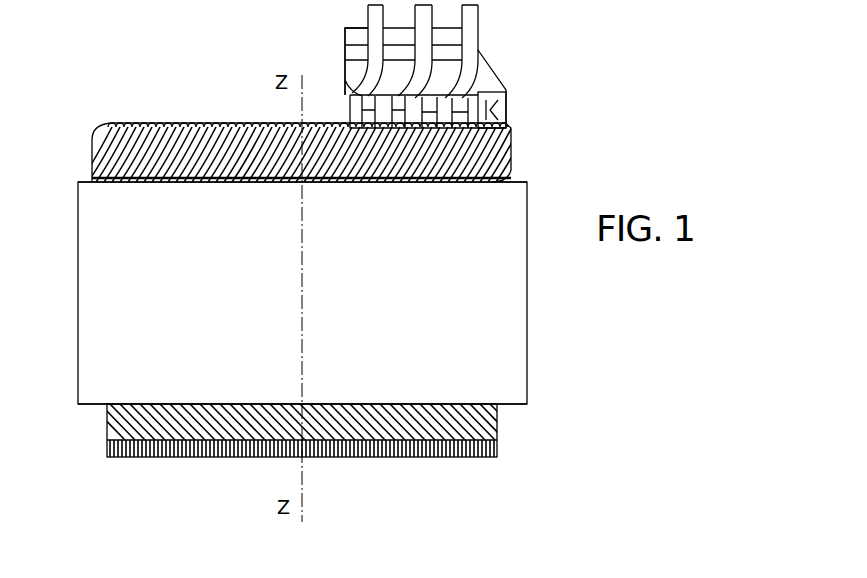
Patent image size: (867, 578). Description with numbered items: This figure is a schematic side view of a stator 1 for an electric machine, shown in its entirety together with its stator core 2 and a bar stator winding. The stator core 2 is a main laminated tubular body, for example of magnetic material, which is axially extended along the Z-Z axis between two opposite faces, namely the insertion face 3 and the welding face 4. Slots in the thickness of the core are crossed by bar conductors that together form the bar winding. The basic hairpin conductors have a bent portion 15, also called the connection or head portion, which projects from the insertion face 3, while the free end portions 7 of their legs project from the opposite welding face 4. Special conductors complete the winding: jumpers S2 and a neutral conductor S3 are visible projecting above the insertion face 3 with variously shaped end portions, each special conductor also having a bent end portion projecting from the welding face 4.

The stator 1 is at (117, 66).
The stator core 2 is at (87, 270).
The insertion face 3 is at (84, 181).
The welding face 4 is at (87, 406).
The bent portion 15 is at (232, 122).
The free end portions 7 is at (190, 458).
The jumpers S2 is at (492, 62).
The neutral conductor S3 is at (345, 40).